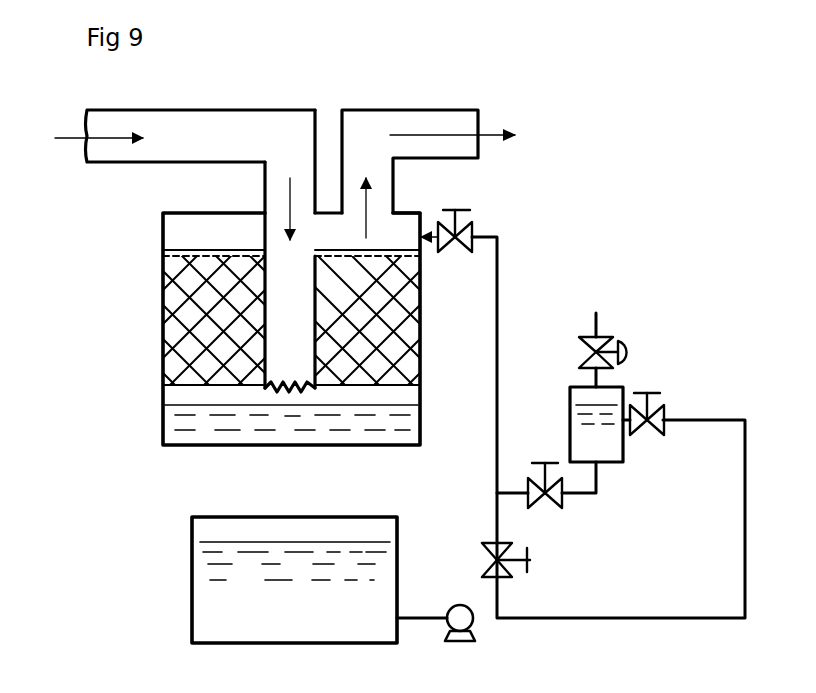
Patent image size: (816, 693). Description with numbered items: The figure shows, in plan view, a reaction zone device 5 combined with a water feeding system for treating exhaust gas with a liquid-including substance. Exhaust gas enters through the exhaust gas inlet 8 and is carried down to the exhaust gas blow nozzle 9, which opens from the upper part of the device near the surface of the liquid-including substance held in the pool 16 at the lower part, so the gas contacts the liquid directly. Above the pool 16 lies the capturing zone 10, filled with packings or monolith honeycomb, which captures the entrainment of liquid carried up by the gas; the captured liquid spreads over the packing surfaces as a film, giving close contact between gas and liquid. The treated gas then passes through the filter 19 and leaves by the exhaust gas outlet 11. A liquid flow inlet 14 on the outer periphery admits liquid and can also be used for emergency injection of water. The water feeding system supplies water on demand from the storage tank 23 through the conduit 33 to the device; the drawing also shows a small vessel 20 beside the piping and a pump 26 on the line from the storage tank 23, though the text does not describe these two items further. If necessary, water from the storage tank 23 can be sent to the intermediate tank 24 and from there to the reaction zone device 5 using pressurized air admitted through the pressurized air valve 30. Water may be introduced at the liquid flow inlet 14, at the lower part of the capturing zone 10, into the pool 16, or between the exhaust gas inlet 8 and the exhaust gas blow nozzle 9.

The reaction zone device 5 is at (163, 334).
The exhaust gas inlet 8 is at (107, 130).
The exhaust gas blow nozzle 9 is at (278, 390).
The capturing zone 10 is at (205, 357).
The exhaust gas outlet 11 is at (452, 123).
The liquid flow inlet 14 is at (426, 240).
The pool 16 is at (200, 427).
The filter 19 is at (186, 253).
The liquid supply tank 20 is at (602, 398).
The storage tank 23 is at (192, 575).
The intermediate tank 24 is at (626, 452).
The pump 26 is at (462, 605).
The pressurized air valve 30 is at (588, 364).
The conduit 33 is at (497, 298).